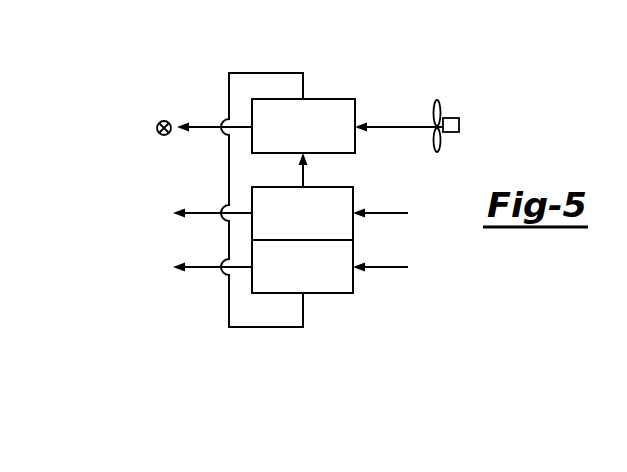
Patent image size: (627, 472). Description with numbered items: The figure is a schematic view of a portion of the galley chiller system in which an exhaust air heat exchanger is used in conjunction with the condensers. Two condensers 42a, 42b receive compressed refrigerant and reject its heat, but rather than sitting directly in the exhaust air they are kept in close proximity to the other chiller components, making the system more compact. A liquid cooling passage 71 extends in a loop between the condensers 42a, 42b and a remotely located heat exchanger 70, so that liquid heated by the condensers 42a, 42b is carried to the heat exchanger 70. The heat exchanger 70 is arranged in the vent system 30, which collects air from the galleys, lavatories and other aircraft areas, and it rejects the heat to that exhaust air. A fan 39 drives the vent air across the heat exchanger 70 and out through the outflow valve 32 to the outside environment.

The vent system 30 is at (394, 95).
The outflow valve 32 is at (160, 121).
The fan 39 is at (456, 118).
The condenser 42a is at (343, 187).
The condenser 42b is at (338, 293).
The heat exchanger 70 is at (341, 99).
The liquid cooling passage 71 is at (444, 301).